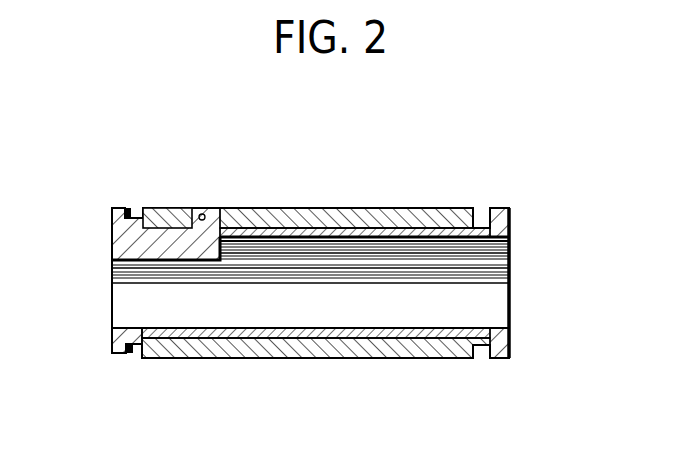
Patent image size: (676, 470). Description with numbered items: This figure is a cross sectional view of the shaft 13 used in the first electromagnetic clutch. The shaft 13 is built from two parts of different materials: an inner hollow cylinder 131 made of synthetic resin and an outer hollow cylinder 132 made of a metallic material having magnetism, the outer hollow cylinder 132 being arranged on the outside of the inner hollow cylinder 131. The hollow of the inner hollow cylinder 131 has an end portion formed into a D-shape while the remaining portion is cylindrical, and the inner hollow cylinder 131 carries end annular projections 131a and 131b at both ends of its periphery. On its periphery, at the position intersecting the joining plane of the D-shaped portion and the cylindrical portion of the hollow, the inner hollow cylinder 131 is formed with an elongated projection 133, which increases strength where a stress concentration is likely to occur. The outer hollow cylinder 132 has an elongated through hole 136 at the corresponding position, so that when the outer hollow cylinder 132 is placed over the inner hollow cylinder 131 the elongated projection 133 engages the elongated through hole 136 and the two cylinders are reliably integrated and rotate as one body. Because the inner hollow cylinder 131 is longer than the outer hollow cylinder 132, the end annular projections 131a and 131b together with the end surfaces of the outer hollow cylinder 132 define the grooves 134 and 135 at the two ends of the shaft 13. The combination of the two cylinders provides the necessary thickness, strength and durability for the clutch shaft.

The shaft 13 is at (448, 202).
The inner hollow cylinder 131 is at (512, 260).
The end annular projection 131a is at (498, 210).
The end annular projection 131b is at (126, 208).
The outer hollow cylinder 132 is at (359, 347).
The elongated projection 133 is at (257, 208).
The groove 134 is at (134, 355).
The groove 135 is at (481, 355).
The elongated through hole 136 is at (206, 208).